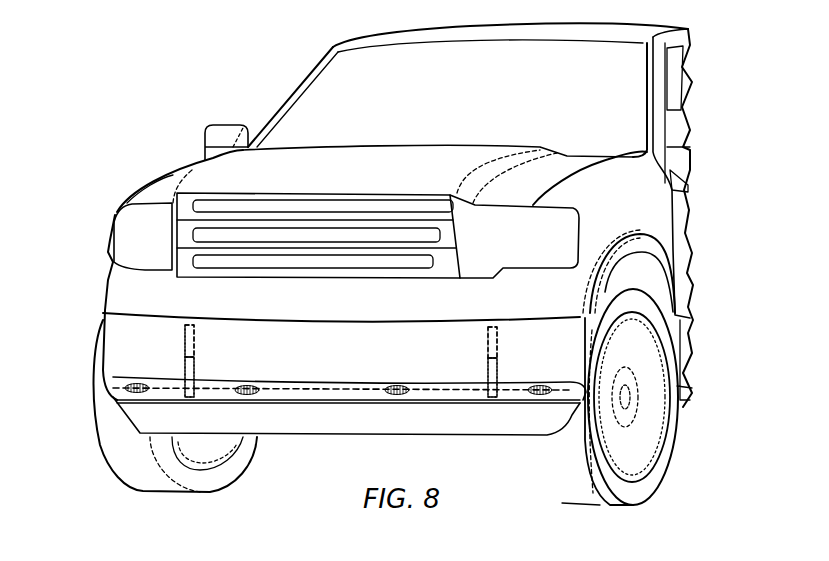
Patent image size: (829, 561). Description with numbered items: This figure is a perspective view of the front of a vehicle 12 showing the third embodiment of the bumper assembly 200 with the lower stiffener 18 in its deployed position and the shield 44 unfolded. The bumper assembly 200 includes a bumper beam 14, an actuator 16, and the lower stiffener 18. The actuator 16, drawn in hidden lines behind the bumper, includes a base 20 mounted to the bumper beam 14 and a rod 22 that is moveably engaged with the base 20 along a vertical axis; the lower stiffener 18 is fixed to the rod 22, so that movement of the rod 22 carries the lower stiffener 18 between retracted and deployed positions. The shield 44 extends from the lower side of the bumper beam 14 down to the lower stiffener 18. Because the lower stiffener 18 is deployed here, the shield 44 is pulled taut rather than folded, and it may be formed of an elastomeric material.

The vehicle 12 is at (300, 63).
The bumper beam 14 is at (102, 322).
The actuator 16 is at (205, 346).
The lower stiffener 18 is at (299, 425).
The base 20 is at (185, 337).
The rod 22 is at (185, 372).
The shield 44 is at (170, 390).
The bumper assembly 200 is at (90, 316).